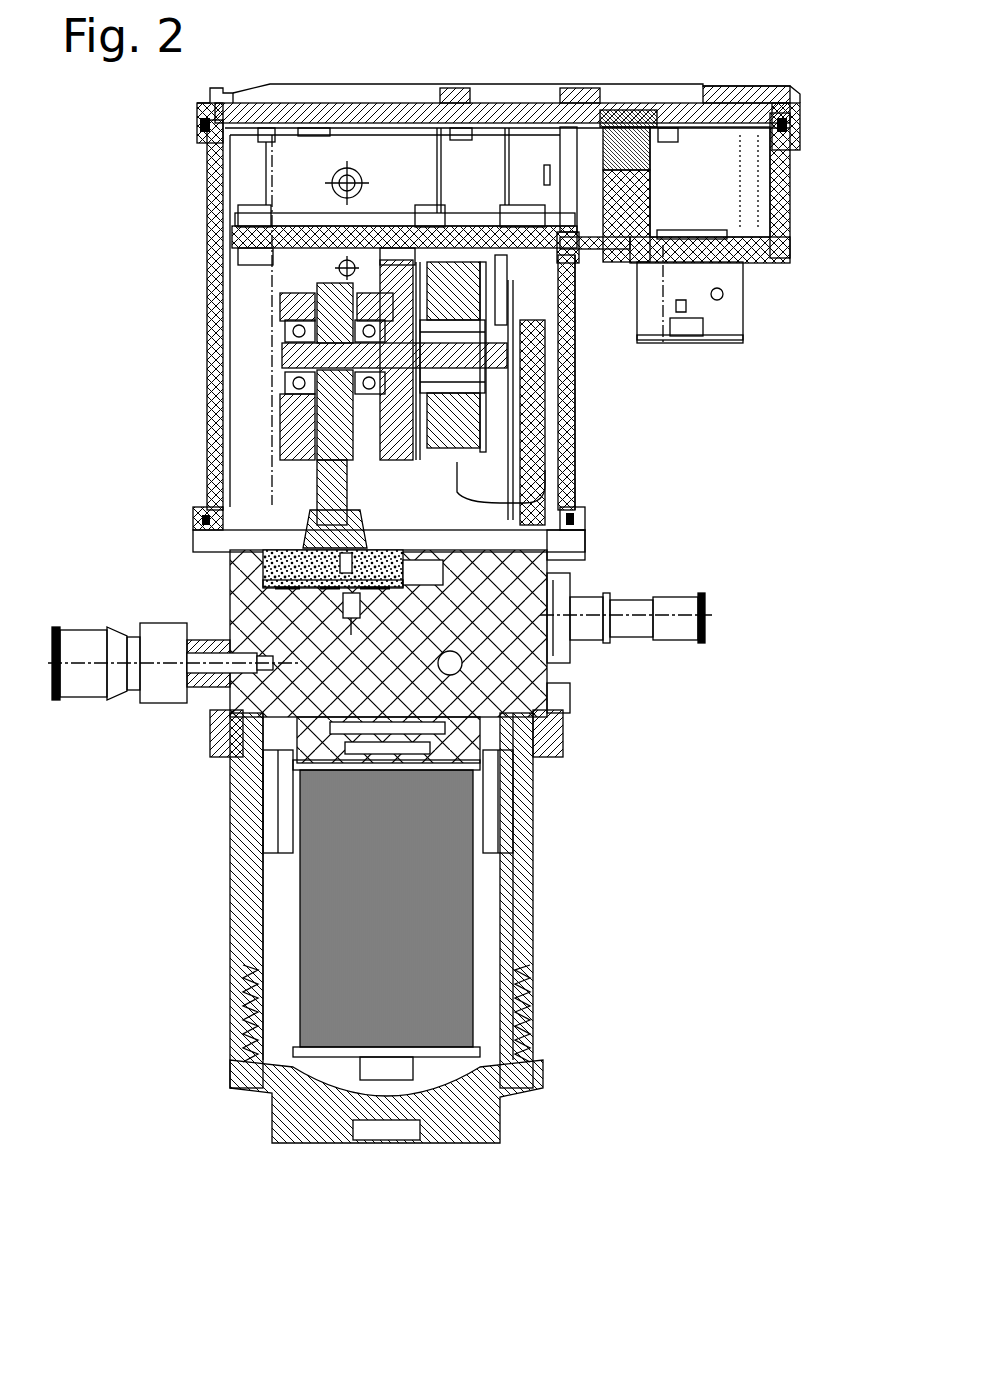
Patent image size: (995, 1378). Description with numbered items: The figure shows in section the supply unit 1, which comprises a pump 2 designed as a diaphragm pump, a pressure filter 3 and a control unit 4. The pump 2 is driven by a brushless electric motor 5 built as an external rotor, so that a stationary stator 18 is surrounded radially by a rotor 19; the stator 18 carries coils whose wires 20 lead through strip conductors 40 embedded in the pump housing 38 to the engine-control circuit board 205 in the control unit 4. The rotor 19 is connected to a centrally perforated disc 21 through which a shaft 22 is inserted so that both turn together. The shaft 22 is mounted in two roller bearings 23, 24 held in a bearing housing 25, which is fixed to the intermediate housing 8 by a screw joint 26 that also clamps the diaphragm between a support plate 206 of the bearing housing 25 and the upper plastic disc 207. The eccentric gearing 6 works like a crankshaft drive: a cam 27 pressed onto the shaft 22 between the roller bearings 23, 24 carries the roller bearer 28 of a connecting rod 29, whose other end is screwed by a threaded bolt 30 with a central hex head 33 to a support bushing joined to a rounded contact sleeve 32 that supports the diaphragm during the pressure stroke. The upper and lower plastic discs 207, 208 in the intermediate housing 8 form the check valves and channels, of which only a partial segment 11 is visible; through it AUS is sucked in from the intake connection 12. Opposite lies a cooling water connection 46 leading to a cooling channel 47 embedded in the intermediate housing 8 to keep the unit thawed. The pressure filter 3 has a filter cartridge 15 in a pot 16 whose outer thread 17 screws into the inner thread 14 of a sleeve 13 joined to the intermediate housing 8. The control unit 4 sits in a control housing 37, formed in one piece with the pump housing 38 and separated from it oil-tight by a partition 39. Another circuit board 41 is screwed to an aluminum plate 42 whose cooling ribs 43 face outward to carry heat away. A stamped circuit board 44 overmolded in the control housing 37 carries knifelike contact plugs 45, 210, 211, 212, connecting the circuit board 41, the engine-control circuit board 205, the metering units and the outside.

The supply unit 1 is at (800, 692).
The pump 2 is at (250, 430).
The pressure filter 3 is at (296, 950).
The control unit 4 is at (588, 240).
The brushless electric motor 5 is at (510, 545).
The eccentric gearing 6 is at (296, 457).
The intermediate housing 8 is at (530, 680).
The partial segment 11 is at (350, 610).
The AUS intake connection 12 is at (672, 637).
The sleeve 13 is at (540, 905).
The inner thread 14 is at (512, 1040).
The filter cartridge 15 is at (423, 975).
The pot 16 is at (525, 868).
The outer thread 17 is at (243, 1036).
The stator 18 is at (540, 405).
The rotor 19 is at (495, 262).
The wires 20 is at (457, 462).
The centrally perforated disc 21 is at (545, 410).
The shaft 22 is at (510, 358).
The roller bearing 23 is at (290, 355).
The roller bearing 24 is at (292, 332).
The bearing housing 25 is at (292, 402).
The screw joint 26 is at (257, 512).
The cam 27 is at (310, 382).
The roller bearer 28 is at (300, 397).
The connecting rod 29 is at (520, 455).
The threaded bolt 30 is at (305, 497).
The contact sleeve 32 is at (262, 567).
The hex head 33 is at (575, 582).
The control housing 37 is at (215, 175).
The pump housing 38 is at (575, 425).
The partition 39 is at (285, 255).
The strip conductors 40 is at (515, 372).
The circuit board 41 is at (380, 104).
The aluminum plate 42 is at (690, 117).
The cooling ribs 43 is at (290, 97).
The stamped circuit board 44 is at (720, 275).
The contact plug 45 is at (650, 150).
The cooling water connection 46 is at (82, 693).
The cooling channel 47 is at (452, 666).
The engine-control circuit board 205 is at (323, 213).
The support plate 206 is at (300, 548).
The upper plastic disc 207 is at (262, 587).
The lower plastic disc 208 is at (420, 583).
The contact plug 210 is at (548, 170).
The contact plug 211 is at (676, 332).
The contact plug 212 is at (712, 302).